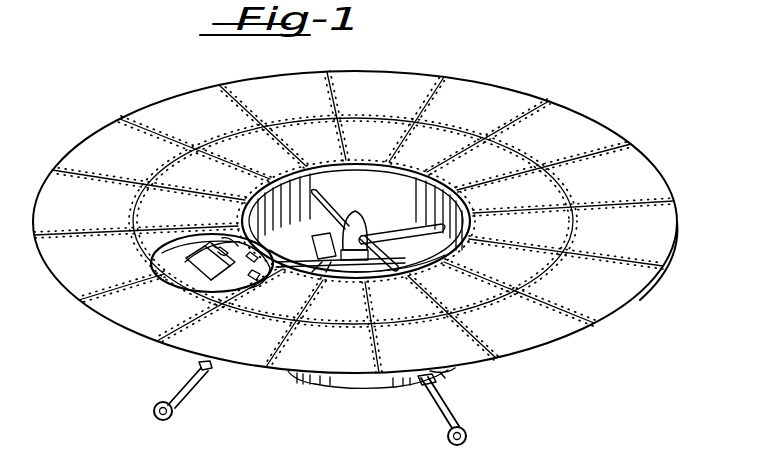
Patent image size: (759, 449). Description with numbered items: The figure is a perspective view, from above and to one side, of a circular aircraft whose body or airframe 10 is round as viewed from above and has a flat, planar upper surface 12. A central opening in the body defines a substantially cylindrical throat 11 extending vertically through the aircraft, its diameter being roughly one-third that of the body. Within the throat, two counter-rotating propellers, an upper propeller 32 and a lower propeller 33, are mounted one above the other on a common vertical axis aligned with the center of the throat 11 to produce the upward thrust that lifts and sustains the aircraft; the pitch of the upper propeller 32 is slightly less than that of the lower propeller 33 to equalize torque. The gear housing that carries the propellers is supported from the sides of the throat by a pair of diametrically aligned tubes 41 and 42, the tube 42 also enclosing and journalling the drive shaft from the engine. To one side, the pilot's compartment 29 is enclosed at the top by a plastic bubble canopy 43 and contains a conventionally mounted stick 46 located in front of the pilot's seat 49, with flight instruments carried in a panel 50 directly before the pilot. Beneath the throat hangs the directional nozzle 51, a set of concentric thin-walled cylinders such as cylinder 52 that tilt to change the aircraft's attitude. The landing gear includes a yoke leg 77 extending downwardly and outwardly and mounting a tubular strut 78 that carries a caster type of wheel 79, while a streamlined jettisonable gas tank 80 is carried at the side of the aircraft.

The body or airframe 10 is at (639, 169).
The throat 11 is at (457, 219).
The upper surface 12 is at (660, 243).
The cockpit hatch 29 is at (168, 278).
The upper propeller 32 is at (318, 200).
The lower propeller 33 is at (334, 248).
The tube 41 is at (329, 266).
The tube 42 is at (406, 238).
The bubble canopy 43 is at (178, 283).
The stick 46 is at (224, 250).
The pilot's seat 49 is at (201, 286).
The panel 50 is at (272, 268).
The directional nozzle 51 is at (316, 388).
The thin-walled cylinder 52 is at (377, 378).
The leg of the Y-shaped yoke 77 is at (209, 366).
The tubular strut 78 is at (184, 394).
The caster type of wheel 79 is at (152, 412).
The jettisonable gas tank 80 is at (440, 368).